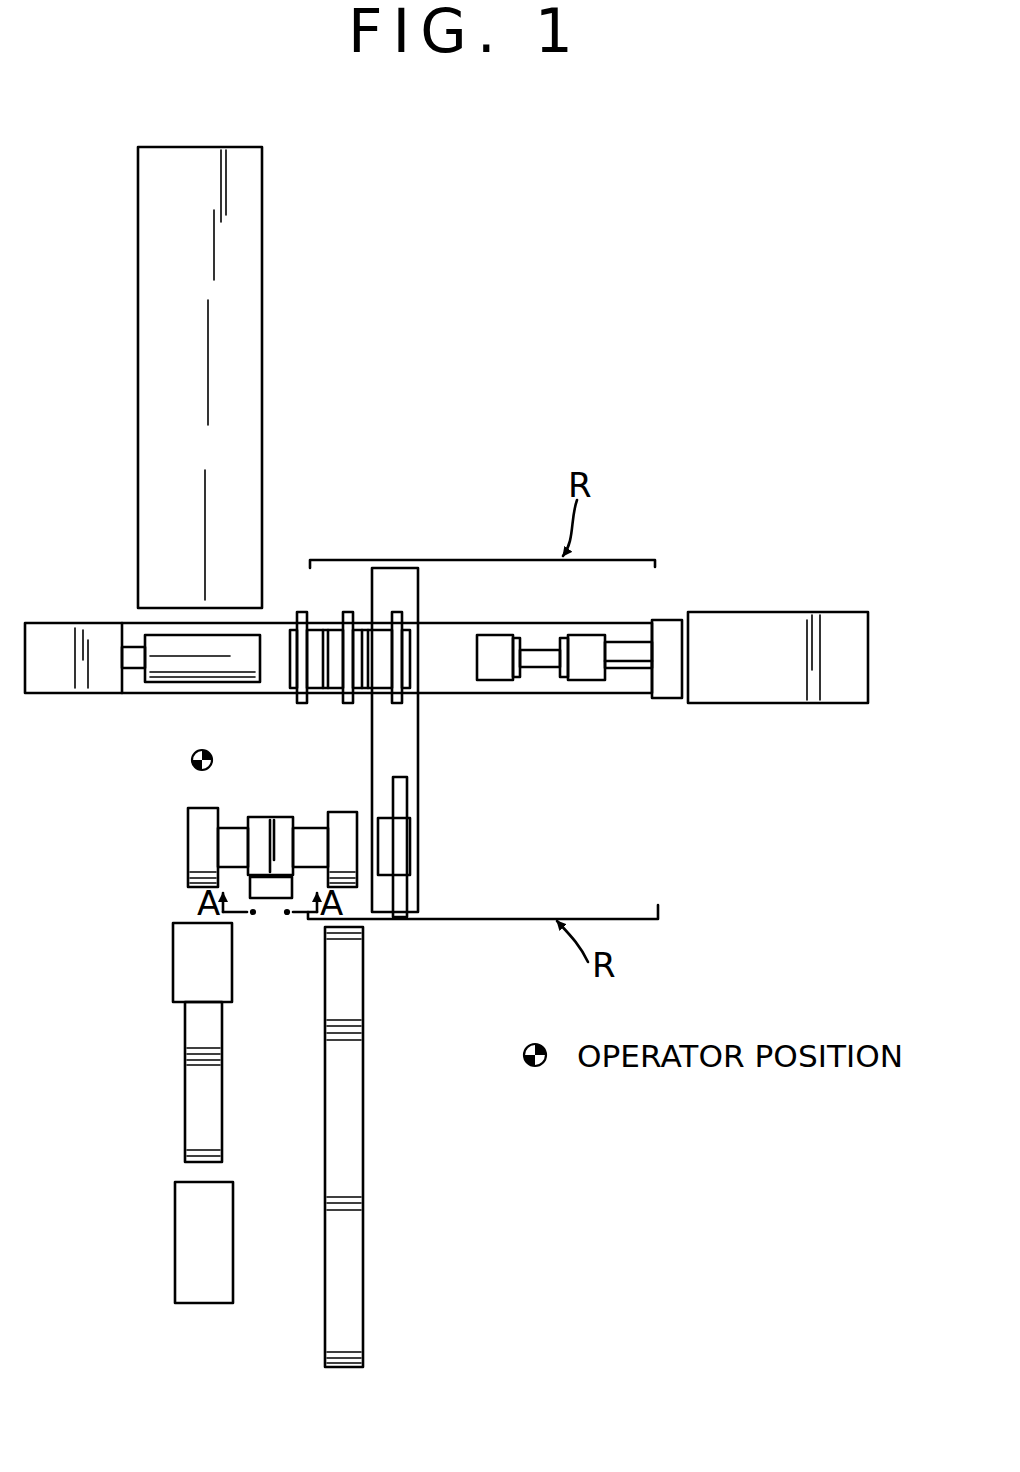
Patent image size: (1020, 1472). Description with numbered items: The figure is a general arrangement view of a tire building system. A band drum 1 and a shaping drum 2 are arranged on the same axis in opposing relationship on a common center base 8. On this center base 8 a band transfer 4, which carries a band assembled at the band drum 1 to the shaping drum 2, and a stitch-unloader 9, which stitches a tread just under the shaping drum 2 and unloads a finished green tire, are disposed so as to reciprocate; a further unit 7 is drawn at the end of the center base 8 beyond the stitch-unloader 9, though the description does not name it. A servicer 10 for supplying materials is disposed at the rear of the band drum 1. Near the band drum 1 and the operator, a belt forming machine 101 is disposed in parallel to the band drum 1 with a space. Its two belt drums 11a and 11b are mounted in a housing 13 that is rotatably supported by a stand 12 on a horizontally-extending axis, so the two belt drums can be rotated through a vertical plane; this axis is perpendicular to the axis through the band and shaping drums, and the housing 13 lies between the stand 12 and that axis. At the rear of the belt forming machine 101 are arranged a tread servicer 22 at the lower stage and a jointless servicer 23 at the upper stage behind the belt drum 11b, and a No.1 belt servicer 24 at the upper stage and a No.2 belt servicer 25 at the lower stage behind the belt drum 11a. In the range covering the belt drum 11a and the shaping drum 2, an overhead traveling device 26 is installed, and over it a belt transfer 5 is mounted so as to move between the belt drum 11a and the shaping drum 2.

The band drum 1 is at (198, 682).
The shaping drum 2 is at (500, 680).
The band transfer 4 is at (347, 703).
The belt transfer 5 is at (408, 803).
The motor 7 is at (758, 612).
The center base 8 is at (453, 624).
The stitch-unloader 9 is at (667, 620).
The servicer 10 is at (262, 350).
The belt drum 11a is at (343, 812).
The belt drum 11b is at (188, 822).
The stand 12 is at (272, 900).
The housing 13 is at (262, 817).
The tread servicer 22 is at (222, 1135).
The jointless servicer 23 is at (173, 970).
The No.1 belt servicer 24 is at (363, 1080).
The No.2 belt servicer 25 is at (325, 1047).
The overhead traveling device 26 is at (418, 587).
The belt forming machine 101 is at (287, 796).